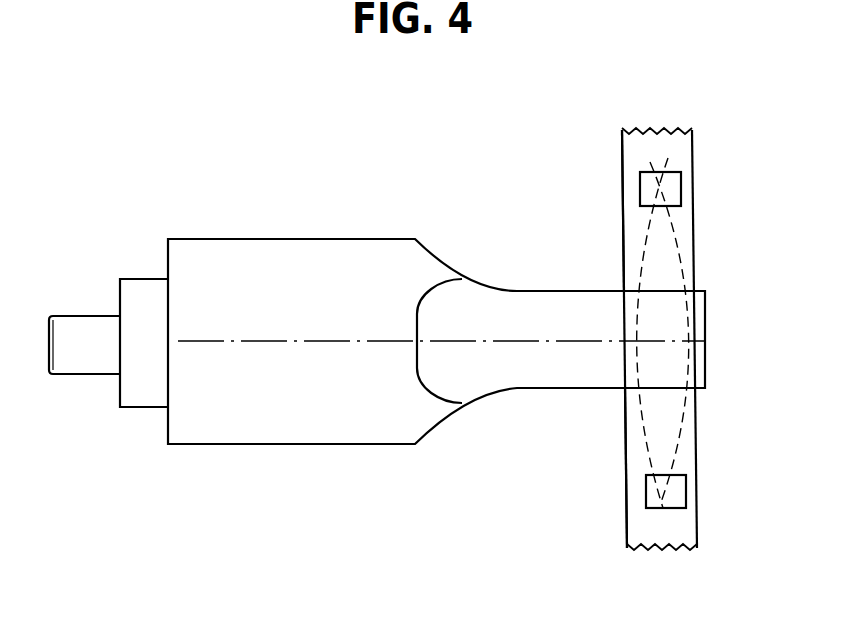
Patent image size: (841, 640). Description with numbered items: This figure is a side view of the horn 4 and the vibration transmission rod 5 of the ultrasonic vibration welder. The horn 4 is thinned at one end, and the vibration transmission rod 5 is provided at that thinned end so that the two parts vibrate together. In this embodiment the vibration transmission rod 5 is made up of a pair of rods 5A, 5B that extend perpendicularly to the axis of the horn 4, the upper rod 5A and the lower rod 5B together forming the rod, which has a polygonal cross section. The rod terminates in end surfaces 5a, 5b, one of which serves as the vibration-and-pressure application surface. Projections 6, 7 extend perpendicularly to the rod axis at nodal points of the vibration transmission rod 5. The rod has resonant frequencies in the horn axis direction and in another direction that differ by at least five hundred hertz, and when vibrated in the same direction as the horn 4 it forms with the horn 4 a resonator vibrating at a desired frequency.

The horn 4 is at (321, 423).
The vibration transmission rod 5 is at (642, 344).
The rod 5A is at (628, 160).
The rod 5B is at (637, 448).
The end surface 5a is at (673, 128).
The end surface 5b is at (670, 549).
The projection 6 is at (672, 185).
The projection 7 is at (678, 493).